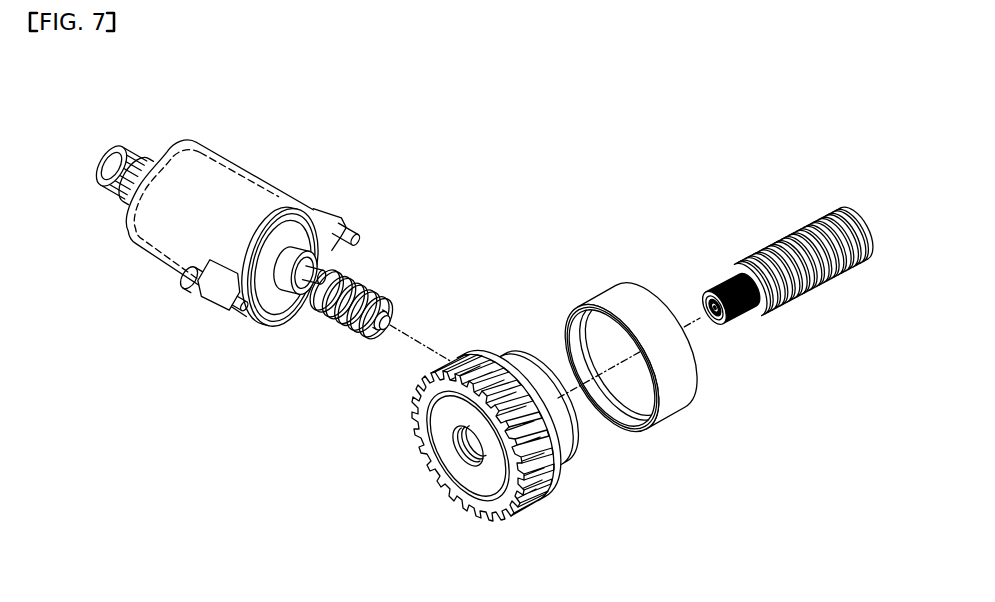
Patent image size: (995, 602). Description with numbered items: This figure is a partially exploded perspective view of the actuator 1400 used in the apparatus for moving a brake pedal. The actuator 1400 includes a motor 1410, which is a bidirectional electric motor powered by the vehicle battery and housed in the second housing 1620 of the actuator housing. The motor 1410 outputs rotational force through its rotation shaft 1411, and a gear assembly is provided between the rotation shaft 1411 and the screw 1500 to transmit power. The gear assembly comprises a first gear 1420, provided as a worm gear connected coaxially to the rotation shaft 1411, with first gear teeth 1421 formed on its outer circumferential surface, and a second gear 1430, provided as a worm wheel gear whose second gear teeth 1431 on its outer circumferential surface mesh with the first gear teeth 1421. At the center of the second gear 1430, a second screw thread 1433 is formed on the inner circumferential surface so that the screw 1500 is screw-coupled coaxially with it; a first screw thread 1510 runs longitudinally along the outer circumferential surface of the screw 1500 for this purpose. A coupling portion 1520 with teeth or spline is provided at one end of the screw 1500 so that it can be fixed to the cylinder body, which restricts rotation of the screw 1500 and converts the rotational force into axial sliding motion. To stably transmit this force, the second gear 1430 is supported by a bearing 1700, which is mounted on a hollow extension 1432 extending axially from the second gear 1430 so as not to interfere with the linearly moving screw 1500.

The actuator 1400 is at (415, 250).
The motor 1410 is at (277, 195).
The rotation shaft 1411 is at (305, 279).
The first gear 1420 is at (355, 340).
The first gear teeth 1421 is at (390, 307).
The second gear 1430 is at (512, 459).
The second gear teeth 1431 is at (552, 497).
The extension 1432 is at (563, 438).
The second screw thread 1433 is at (456, 460).
The screw 1500 is at (789, 254).
The first screw thread 1510 is at (803, 291).
The coupling portion 1520 is at (738, 316).
The second housing 1620 is at (213, 152).
The bearing 1700 is at (630, 296).